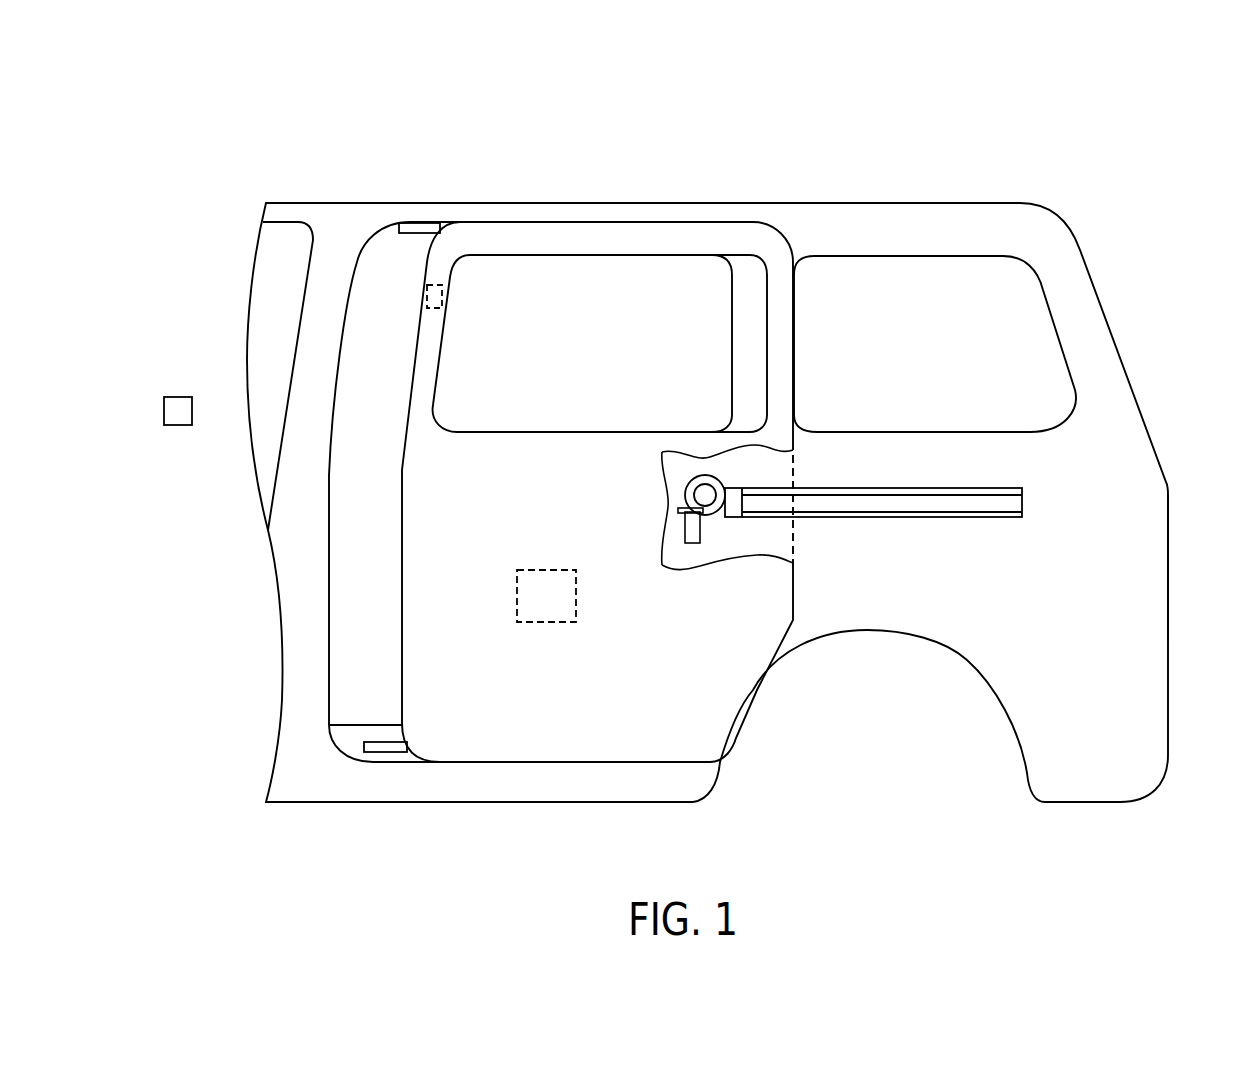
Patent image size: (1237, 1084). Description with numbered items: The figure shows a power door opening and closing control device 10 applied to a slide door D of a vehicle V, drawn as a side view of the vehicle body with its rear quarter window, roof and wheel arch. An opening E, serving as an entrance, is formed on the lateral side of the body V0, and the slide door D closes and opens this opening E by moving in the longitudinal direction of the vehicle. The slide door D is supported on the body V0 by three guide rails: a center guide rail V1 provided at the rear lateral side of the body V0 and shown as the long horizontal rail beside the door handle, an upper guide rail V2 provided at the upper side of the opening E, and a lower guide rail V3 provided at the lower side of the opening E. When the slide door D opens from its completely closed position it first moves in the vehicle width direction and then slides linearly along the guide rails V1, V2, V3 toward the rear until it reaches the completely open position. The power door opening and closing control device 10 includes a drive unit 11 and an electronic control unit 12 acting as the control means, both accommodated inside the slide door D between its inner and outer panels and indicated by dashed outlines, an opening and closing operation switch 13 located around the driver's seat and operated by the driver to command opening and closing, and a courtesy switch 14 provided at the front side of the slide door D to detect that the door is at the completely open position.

The power door opening and closing control device 10 is at (183, 159).
The drive unit 11 is at (695, 537).
The electronic control unit 12 is at (545, 622).
The opening and closing operation switch 13 is at (178, 425).
The courtesy switch 14 is at (437, 308).
The vehicle V is at (978, 182).
The body V0 is at (1153, 572).
The center guide rail V1 is at (978, 520).
The upper guide rail V2 is at (412, 233).
The lower guide rail V3 is at (392, 752).
The opening E is at (330, 573).
The slide door D is at (615, 747).